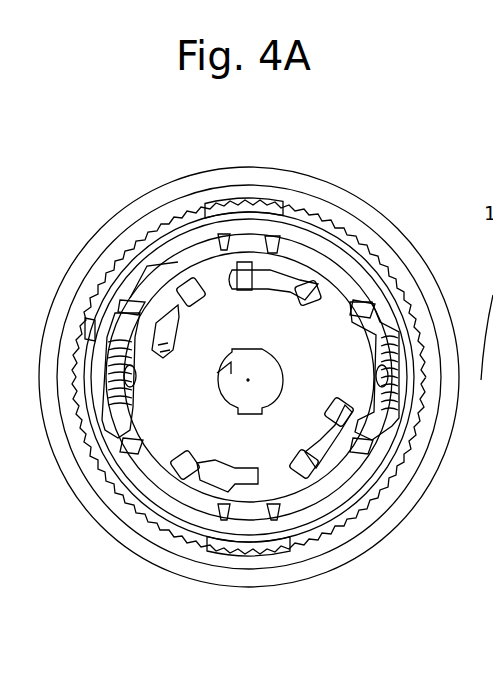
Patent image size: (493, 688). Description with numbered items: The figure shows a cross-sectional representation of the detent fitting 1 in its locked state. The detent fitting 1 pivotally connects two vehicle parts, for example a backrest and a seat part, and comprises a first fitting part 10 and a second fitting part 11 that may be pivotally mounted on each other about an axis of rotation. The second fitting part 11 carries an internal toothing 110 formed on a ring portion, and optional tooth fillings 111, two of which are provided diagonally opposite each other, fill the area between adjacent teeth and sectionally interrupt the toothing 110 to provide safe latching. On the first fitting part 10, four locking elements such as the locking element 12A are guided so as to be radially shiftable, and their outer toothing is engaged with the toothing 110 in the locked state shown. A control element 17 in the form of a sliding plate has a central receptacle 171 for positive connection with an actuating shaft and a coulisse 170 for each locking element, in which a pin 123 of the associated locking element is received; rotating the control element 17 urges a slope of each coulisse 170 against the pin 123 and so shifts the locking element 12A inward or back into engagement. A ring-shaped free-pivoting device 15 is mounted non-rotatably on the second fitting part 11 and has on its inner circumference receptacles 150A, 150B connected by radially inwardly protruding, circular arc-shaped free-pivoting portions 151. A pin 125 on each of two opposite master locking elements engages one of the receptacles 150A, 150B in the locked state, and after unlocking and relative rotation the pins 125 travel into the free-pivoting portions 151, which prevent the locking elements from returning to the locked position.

The detent fitting 1 is at (86, 144).
The first fitting part 10 is at (73, 282).
The second fitting part 11 is at (70, 335).
The locking element 12A is at (355, 243).
The free-pivoting device 15 is at (310, 237).
The control element 17 is at (328, 327).
The toothing 110 is at (270, 215).
The tooth filling 111 is at (210, 203).
The pin 123 is at (308, 296).
The pin 125 is at (172, 256).
The receptacle 150A is at (147, 265).
The receptacle 150B is at (392, 323).
The free-pivoting portion 151 is at (247, 258).
The coulisse 170 is at (292, 288).
The central receptacle 171 is at (230, 367).